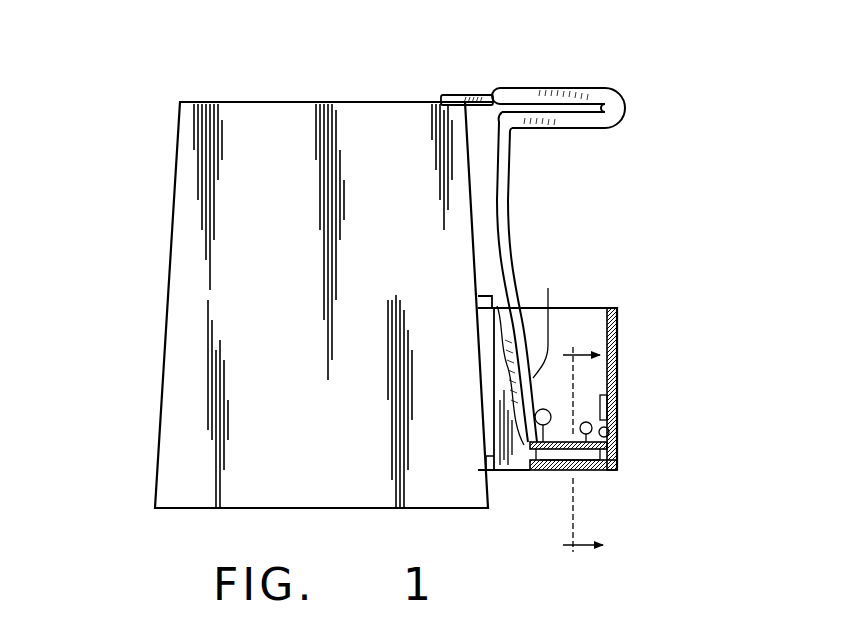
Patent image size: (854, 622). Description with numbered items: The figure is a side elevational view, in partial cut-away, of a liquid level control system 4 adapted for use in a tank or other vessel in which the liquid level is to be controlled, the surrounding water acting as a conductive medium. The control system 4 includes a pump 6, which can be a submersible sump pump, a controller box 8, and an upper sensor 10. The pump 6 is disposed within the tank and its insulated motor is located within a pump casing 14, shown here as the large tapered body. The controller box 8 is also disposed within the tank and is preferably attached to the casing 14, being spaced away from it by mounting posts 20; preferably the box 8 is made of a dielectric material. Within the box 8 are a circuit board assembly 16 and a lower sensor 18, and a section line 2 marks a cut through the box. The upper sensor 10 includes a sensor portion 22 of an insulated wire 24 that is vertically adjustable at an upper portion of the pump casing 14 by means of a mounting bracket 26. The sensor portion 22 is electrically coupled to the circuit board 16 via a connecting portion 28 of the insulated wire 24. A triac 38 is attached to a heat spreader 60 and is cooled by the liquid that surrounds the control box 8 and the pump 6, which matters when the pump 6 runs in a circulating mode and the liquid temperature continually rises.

The section line 2 is at (599, 452).
The control system 4 is at (657, 140).
The pump 6 is at (170, 152).
The controller box 8 is at (601, 375).
The upper sensor 10 is at (582, 226).
The pump casing 14 is at (276, 110).
The circuit board assembly 16 is at (626, 427).
The lower sensor 18 is at (626, 463).
The mounting posts 20 is at (478, 294).
The sensor portion 22 is at (613, 101).
The insulated wire 24 is at (514, 220).
The mounting bracket 26 is at (477, 96).
The connecting portion 28 is at (546, 321).
The triac 38 is at (604, 400).
The heat spreader 60 is at (603, 343).